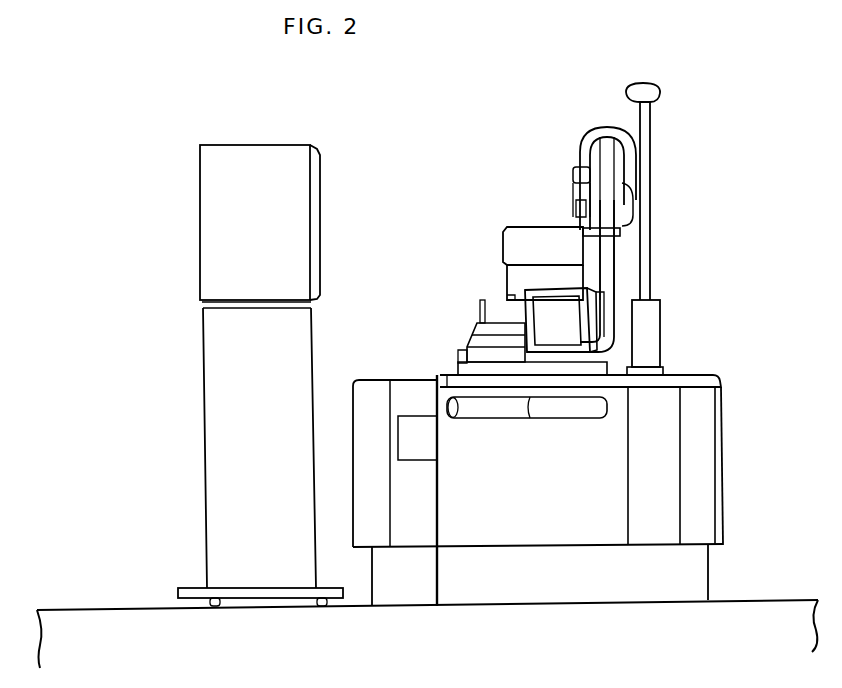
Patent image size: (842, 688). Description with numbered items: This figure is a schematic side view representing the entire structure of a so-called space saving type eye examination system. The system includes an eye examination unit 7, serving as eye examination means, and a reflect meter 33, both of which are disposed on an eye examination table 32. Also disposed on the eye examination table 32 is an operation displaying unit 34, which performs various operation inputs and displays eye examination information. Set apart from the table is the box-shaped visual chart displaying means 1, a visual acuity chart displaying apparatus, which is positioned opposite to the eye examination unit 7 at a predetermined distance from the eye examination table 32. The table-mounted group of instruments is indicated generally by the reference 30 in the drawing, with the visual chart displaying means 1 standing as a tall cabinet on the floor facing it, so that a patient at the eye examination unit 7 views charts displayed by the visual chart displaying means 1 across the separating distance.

The visual chart displaying means 1 is at (200, 252).
The processing apparatus 30 is at (538, 344).
The eye examination table 32 is at (393, 377).
The reflect meter 33 is at (530, 227).
The operation displaying unit 34 is at (603, 288).
The eye examination unit 7 is at (582, 142).